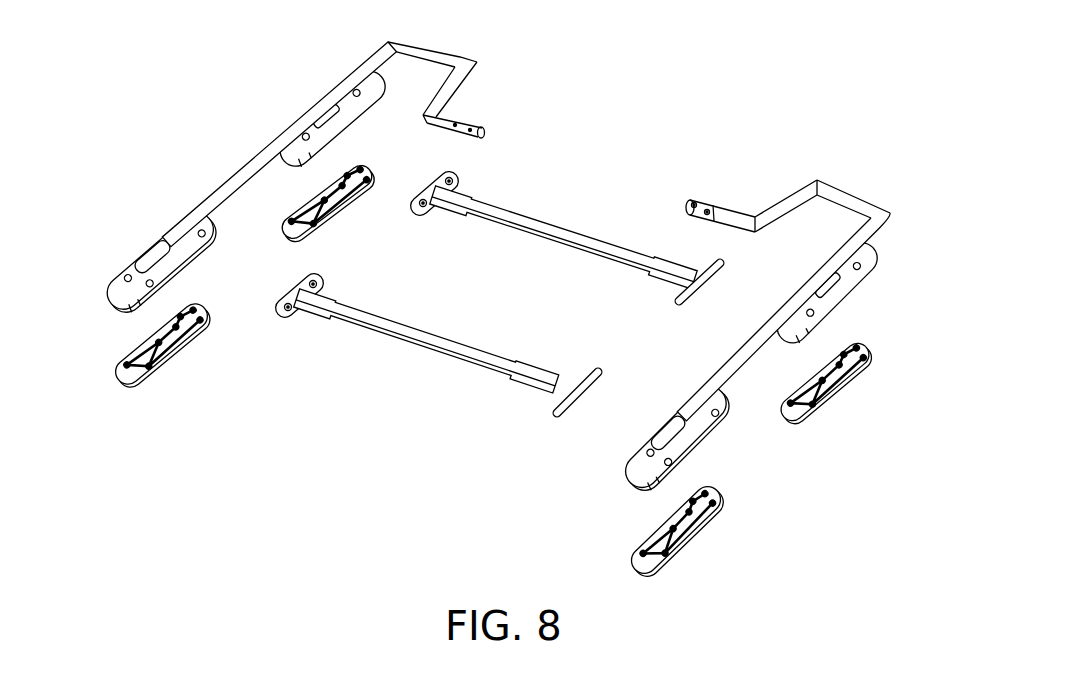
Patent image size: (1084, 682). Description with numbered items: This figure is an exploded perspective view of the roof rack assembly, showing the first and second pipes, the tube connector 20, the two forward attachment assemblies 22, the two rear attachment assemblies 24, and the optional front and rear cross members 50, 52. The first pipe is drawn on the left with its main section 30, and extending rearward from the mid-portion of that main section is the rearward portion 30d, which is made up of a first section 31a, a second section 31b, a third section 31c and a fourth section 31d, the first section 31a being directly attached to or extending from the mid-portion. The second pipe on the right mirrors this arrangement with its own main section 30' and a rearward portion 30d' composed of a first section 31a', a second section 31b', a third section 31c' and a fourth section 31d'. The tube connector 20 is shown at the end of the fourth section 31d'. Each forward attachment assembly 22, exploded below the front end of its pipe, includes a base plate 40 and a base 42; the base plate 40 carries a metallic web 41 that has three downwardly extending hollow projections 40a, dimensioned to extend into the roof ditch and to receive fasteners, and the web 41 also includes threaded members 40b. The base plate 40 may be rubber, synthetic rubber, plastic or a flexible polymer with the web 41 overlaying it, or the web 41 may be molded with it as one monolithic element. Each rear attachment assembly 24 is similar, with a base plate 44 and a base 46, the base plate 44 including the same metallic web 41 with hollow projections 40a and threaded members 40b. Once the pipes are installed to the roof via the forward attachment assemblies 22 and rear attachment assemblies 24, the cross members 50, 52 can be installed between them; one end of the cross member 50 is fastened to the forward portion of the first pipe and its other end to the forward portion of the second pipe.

The tube connector 20 is at (703, 205).
The forward attachment assembly 22 is at (419, 416).
The rear attachment assembly 24 is at (619, 249).
The main section 30 is at (279, 144).
The main section 30' is at (783, 317).
The rearward portion 30d is at (506, 75).
The rearward portion 30d' is at (818, 165).
The first section 31a is at (444, 39).
The second section 31b is at (503, 45).
The third section 31c is at (506, 89).
The fourth section 31d is at (514, 120).
The first section 31a' is at (904, 200).
The second section 31b' is at (856, 185).
The third section 31c' is at (797, 184).
The fourth section 31d' is at (736, 177).
The base plate 40 is at (443, 441).
The hollow projection 40a is at (194, 310).
The threaded member 40b is at (190, 306).
The metallic web 41 is at (140, 343).
The base 42 is at (133, 268).
The base plate 44 is at (597, 283).
The base 46 is at (357, 120).
The cross member 50 is at (427, 333).
The cross member 52 is at (575, 235).